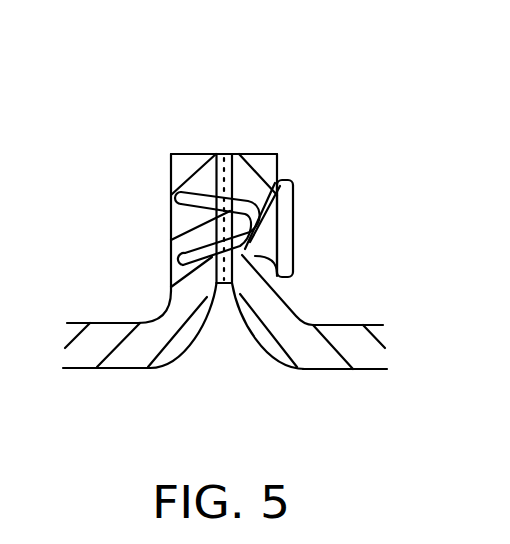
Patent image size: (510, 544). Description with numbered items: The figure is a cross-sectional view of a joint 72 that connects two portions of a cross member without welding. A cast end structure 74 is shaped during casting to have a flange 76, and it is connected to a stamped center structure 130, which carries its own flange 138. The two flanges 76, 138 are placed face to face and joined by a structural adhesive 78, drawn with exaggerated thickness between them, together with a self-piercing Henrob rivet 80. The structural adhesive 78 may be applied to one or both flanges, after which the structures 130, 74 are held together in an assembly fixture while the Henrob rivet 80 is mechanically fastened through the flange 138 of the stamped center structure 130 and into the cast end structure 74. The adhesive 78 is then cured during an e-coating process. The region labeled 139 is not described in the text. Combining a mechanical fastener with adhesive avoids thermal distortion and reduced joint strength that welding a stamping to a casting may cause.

The joint 72 is at (263, 109).
The end structure 74 is at (78, 324).
The flange 76 is at (182, 153).
The structural adhesive 78 is at (223, 157).
The Henrob rivet 80 is at (283, 207).
The center structure 130 is at (371, 323).
The flange 138 is at (266, 356).
The housing top wall 139 is at (260, 157).